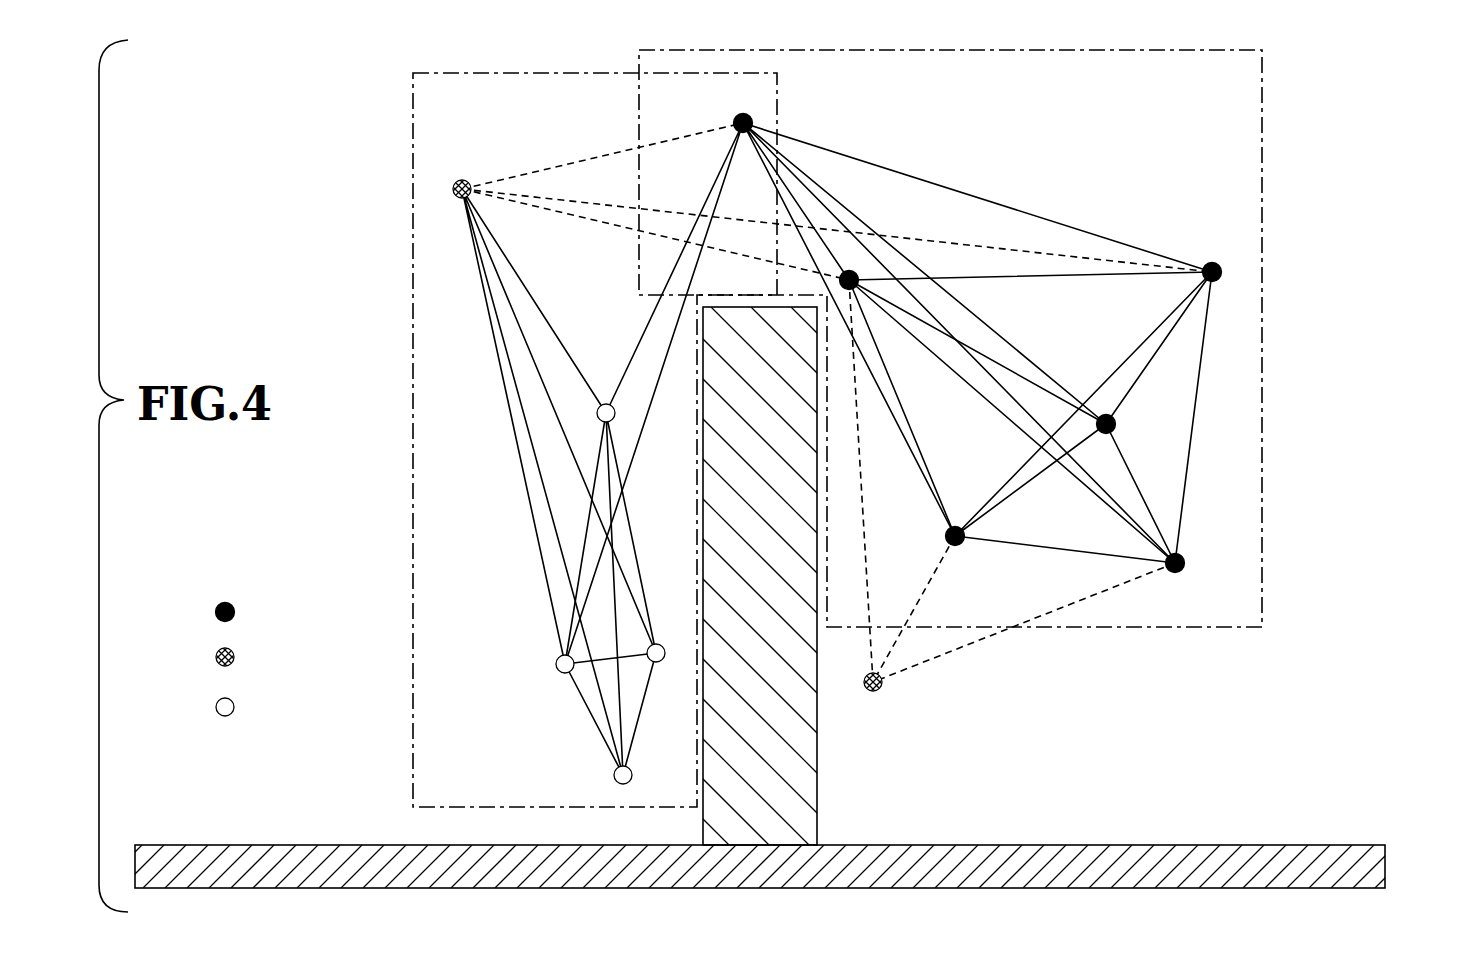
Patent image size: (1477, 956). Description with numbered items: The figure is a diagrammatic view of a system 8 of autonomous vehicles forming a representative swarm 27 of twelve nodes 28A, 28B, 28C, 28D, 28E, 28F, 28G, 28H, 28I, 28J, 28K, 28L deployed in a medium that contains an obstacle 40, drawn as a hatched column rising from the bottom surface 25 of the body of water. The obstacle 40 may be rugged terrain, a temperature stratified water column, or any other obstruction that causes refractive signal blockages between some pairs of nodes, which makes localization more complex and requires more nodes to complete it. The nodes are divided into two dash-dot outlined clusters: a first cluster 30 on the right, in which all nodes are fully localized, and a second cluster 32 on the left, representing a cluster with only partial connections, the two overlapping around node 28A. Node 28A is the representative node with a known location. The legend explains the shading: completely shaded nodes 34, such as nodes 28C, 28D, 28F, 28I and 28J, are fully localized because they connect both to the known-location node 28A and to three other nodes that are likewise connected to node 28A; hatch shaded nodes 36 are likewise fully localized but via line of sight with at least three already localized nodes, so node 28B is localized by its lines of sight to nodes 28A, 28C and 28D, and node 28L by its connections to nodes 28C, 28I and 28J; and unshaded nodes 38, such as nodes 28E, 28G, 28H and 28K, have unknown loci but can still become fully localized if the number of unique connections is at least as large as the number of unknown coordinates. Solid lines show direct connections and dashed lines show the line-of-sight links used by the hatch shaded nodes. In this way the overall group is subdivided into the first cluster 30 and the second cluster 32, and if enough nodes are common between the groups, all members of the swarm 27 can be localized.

The system 8 is at (887, 428).
The swarm 27 is at (1302, 120).
The first cluster 30 is at (1263, 232).
The second cluster 32 is at (412, 205).
The node 28A is at (736, 115).
The node 28B is at (468, 181).
The node 28C is at (857, 273).
The node 28D is at (1215, 263).
The node 28E is at (597, 413).
The node 28F is at (1116, 424).
The node 28G is at (556, 664).
The node 28H is at (663, 661).
The node 28I is at (962, 545).
The node 28J is at (1181, 573).
The node 28K is at (615, 780).
The node 28L is at (880, 690).
The obstacle 40 is at (775, 518).
The bottom surface 25 is at (1065, 845).
The completely shaded nodes 34 is at (234, 609).
The hatch shaded nodes 36 is at (234, 654).
The unshaded nodes 38 is at (234, 704).